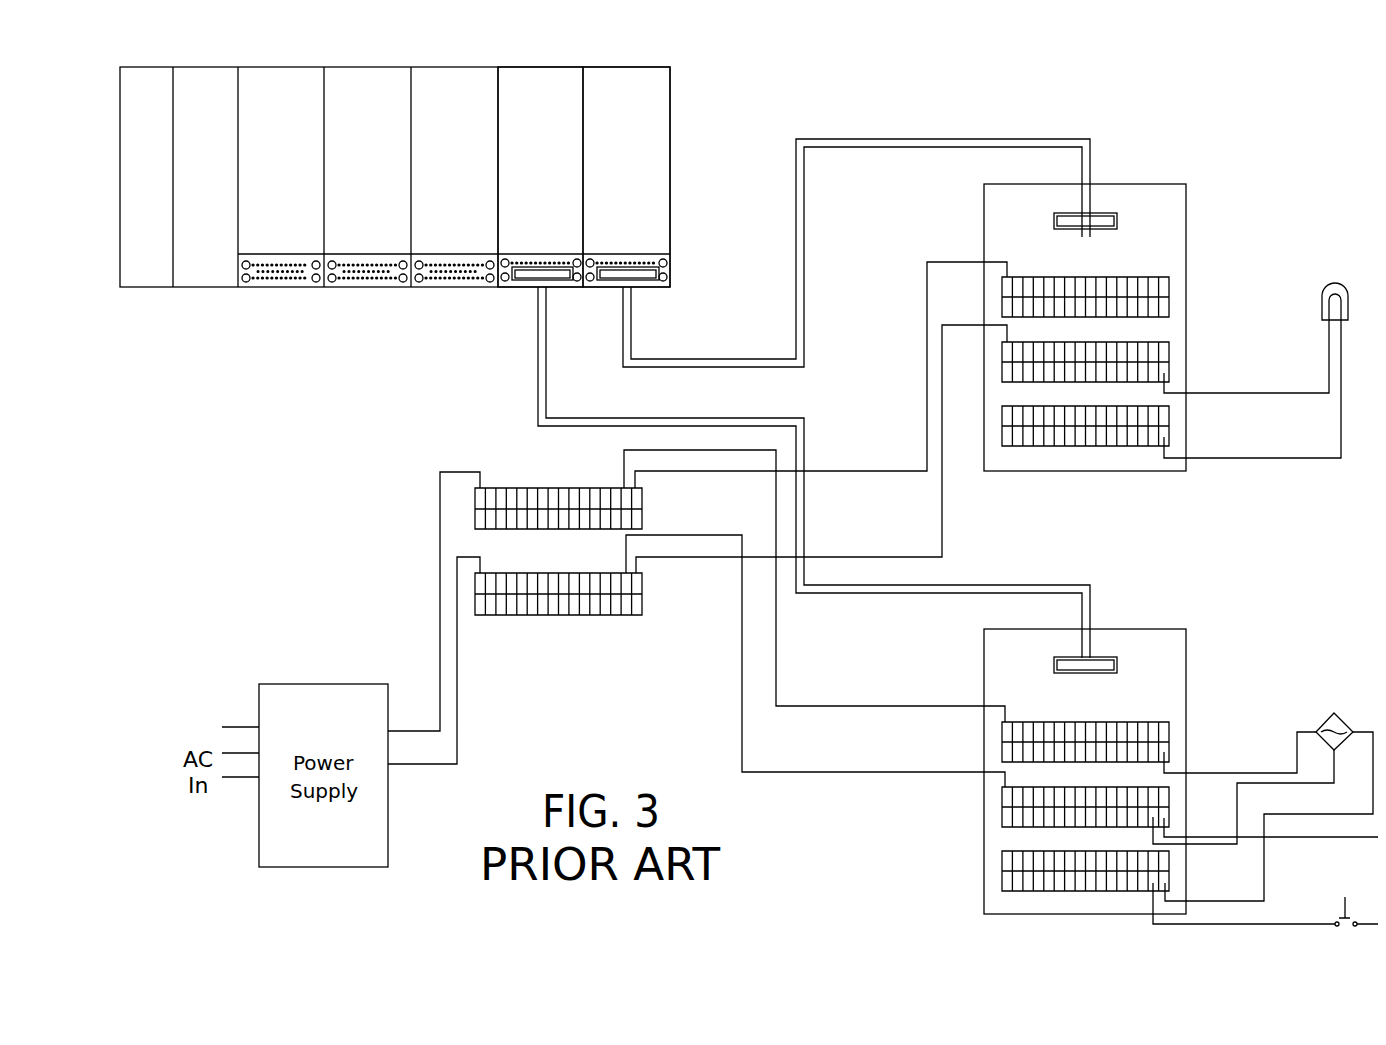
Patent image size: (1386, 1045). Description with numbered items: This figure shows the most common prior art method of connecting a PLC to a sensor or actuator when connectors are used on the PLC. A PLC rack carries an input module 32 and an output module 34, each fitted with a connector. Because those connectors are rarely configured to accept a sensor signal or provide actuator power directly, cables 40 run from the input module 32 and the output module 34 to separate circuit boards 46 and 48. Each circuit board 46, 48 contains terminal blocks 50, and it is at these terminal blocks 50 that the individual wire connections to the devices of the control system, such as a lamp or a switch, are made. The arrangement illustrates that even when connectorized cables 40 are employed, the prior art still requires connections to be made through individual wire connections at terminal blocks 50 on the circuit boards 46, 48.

The input module 32 is at (541, 65).
The output module 34 is at (628, 65).
The cable 40 is at (877, 137).
The circuit board 46 is at (1162, 183).
The circuit board 48 is at (1145, 628).
The terminal block 50 is at (1128, 272).